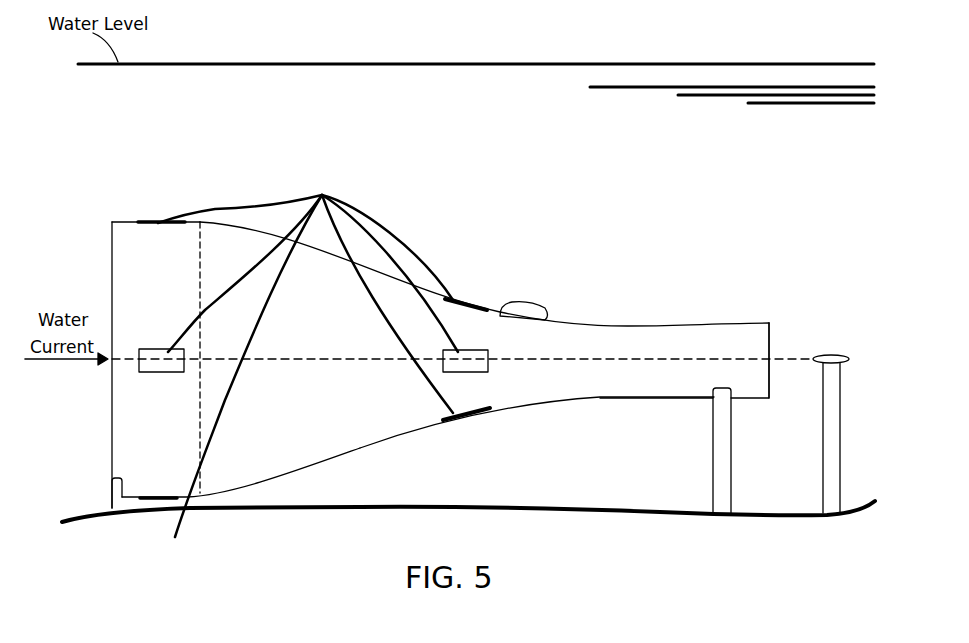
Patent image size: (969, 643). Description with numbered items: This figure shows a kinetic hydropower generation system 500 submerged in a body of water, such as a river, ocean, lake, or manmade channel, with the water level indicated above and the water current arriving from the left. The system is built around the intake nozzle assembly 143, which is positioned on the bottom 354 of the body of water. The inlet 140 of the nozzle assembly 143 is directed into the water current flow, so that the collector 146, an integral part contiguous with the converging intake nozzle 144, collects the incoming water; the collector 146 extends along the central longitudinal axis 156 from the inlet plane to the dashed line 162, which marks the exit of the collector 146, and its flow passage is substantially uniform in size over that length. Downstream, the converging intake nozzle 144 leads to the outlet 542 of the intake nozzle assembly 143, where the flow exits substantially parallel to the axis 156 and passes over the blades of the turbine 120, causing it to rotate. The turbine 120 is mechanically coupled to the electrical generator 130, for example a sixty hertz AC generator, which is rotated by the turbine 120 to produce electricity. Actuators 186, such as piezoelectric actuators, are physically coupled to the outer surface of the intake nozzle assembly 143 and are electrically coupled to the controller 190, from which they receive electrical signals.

The turbine 120 is at (817, 393).
The electrical generator 130 is at (848, 355).
The inlet 140 is at (112, 285).
The intake nozzle assembly 143 is at (398, 433).
The converging intake nozzle 144 is at (280, 479).
The collector 146 is at (113, 221).
The central longitudinal axis 156 is at (600, 360).
The exit of collector 162 is at (233, 376).
The actuators 186 is at (313, 294).
The controller 190 is at (528, 302).
The bottom of the body of water 354 is at (553, 508).
The kinetic hydropower generation system 500 is at (655, 190).
The outlet 542 is at (770, 336).